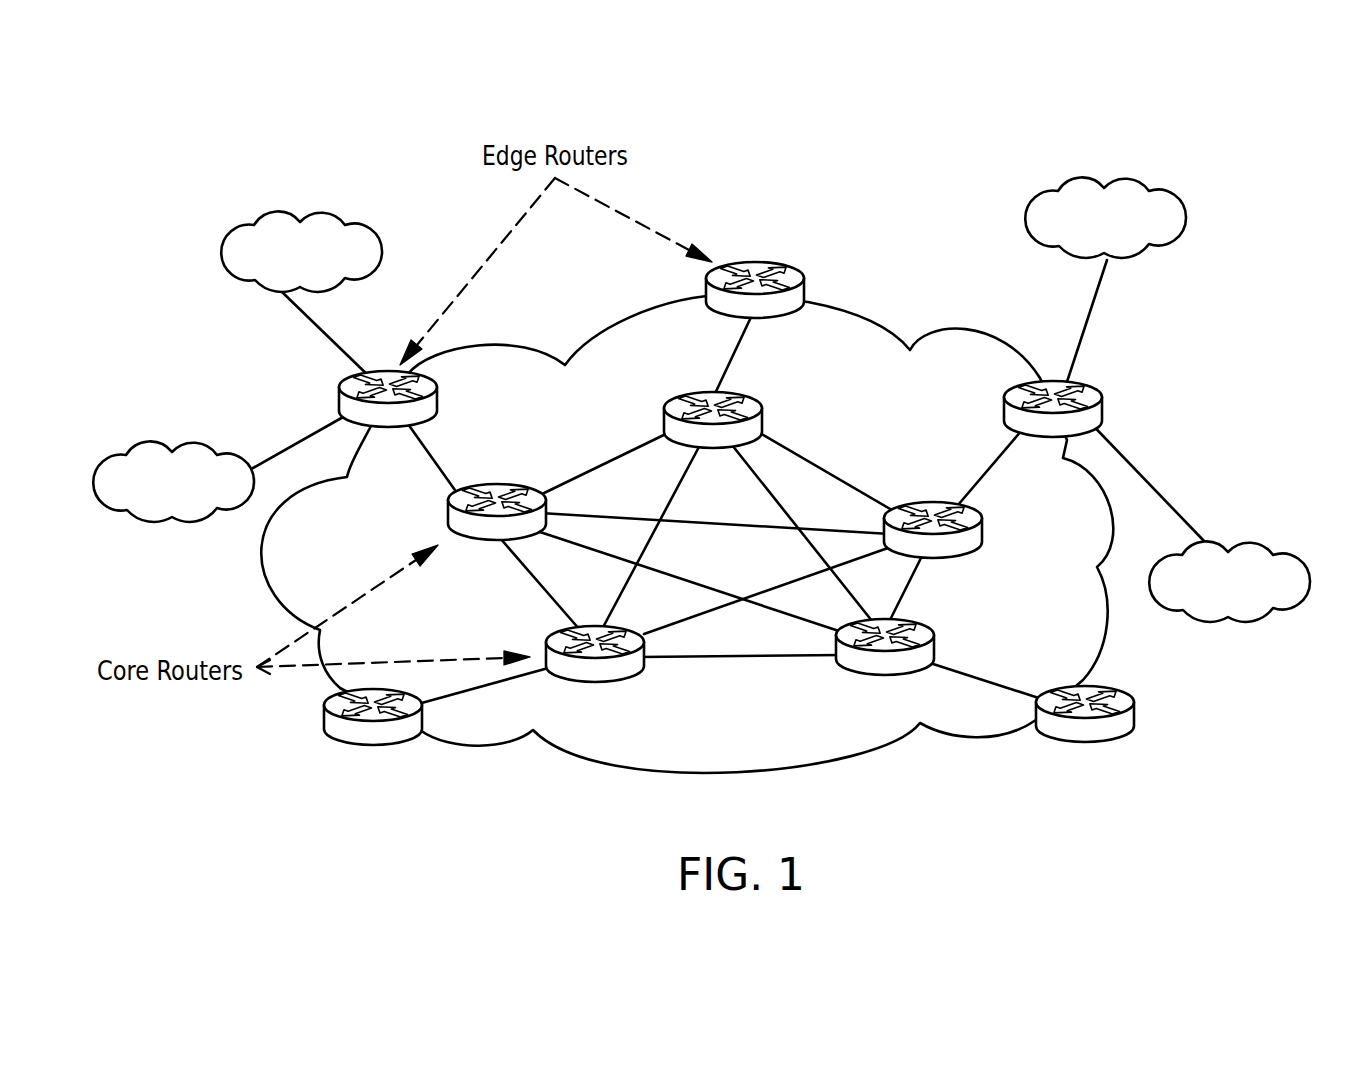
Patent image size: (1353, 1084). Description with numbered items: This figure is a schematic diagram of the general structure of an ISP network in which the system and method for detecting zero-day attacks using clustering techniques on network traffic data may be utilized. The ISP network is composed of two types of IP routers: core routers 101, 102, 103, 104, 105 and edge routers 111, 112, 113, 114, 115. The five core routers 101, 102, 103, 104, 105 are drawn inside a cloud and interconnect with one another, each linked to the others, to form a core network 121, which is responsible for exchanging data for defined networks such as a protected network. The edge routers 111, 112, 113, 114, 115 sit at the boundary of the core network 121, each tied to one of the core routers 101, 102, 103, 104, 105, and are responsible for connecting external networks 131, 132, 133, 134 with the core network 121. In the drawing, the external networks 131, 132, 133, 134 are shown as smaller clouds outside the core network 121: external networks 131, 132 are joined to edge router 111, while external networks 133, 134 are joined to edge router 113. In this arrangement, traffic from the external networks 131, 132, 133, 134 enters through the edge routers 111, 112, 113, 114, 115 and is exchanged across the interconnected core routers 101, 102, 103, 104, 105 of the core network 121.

The core router 101 is at (497, 484).
The core router 102 is at (765, 396).
The core router 103 is at (937, 503).
The core router 104 is at (938, 645).
The core router 105 is at (580, 682).
The edge router 111 is at (340, 395).
The edge router 112 is at (752, 262).
The edge router 113 is at (1103, 407).
The edge router 114 is at (1085, 745).
The edge router 115 is at (368, 748).
The core network 121 is at (868, 726).
The external network 131 is at (140, 527).
The external network 132 is at (223, 253).
The external network 133 is at (1168, 190).
The external network 134 is at (1252, 623).